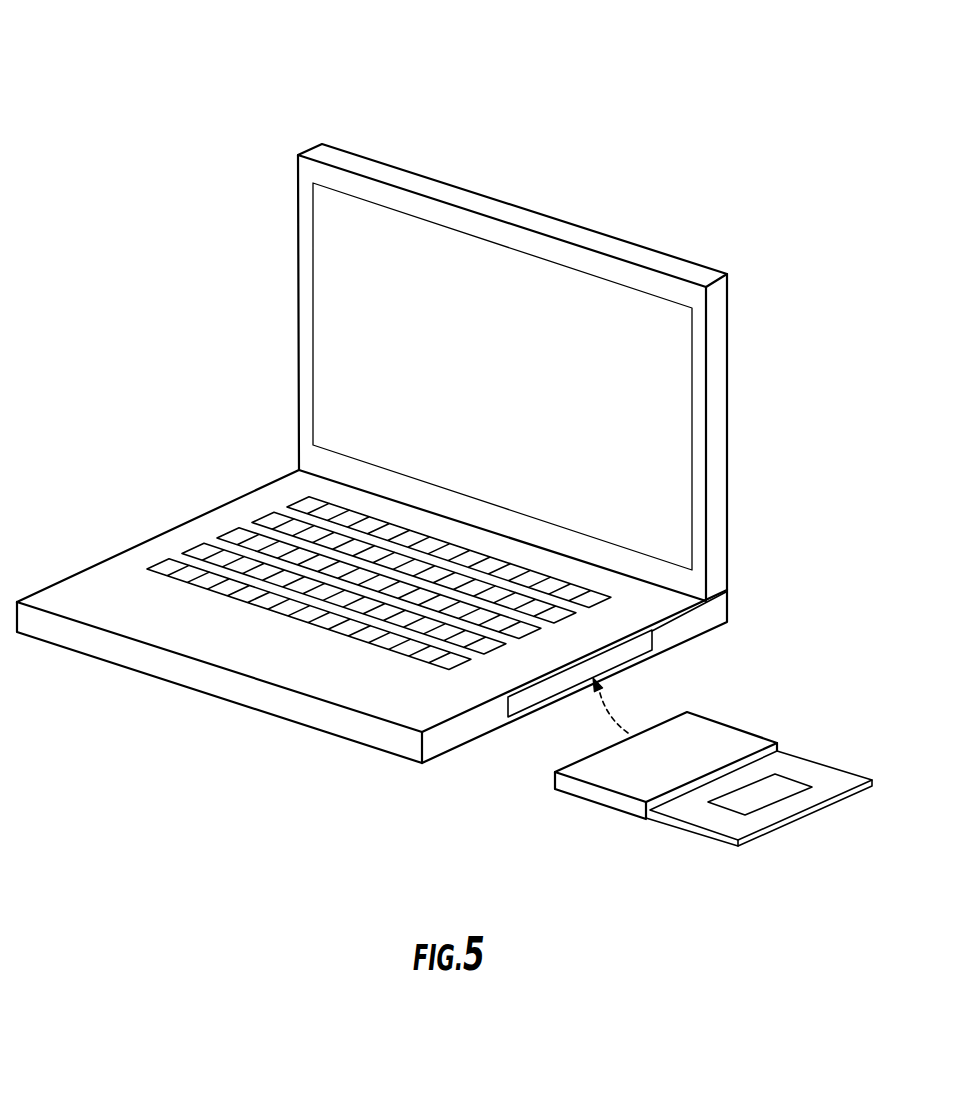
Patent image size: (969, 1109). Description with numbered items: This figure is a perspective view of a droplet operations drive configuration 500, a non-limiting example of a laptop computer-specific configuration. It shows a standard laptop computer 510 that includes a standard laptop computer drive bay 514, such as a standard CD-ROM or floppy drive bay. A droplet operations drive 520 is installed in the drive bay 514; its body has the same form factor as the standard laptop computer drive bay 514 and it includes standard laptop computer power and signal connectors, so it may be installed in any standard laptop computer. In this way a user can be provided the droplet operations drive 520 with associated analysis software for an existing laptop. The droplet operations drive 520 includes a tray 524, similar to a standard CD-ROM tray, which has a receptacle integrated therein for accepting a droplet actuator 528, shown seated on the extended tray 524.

The droplet operations drive configuration 500 is at (212, 60).
The standard laptop computer 510 is at (527, 196).
The standard laptop computer drive bay 514 is at (537, 704).
The droplet operations drive 520 is at (731, 719).
The tray 524 is at (690, 828).
The droplet actuator 528 is at (779, 783).